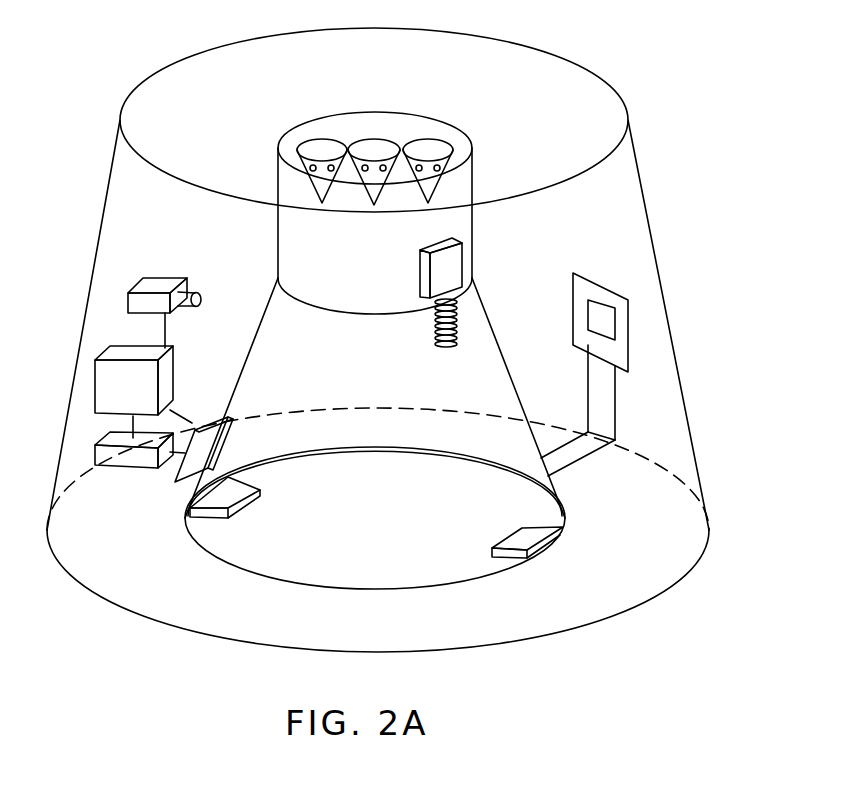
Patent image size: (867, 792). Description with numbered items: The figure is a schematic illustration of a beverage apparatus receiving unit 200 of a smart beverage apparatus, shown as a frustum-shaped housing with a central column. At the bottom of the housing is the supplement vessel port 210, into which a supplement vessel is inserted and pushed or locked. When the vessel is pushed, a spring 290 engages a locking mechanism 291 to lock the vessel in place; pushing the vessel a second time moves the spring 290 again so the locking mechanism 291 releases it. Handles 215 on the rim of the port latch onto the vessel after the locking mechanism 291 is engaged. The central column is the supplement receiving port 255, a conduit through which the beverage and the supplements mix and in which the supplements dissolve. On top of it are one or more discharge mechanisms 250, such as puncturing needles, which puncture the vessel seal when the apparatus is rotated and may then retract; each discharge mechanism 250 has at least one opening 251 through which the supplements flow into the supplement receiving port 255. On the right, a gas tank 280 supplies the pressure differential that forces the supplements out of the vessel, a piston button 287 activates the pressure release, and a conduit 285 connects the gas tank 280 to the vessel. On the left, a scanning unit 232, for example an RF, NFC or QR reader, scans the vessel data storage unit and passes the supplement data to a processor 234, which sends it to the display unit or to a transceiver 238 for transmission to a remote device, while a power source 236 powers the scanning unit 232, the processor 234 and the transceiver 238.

The beverage apparatus receiving unit 200 is at (630, 44).
The supplement vessel port 210 is at (408, 541).
The handles 215 is at (232, 496).
The scanning unit 232 is at (183, 491).
The processor 234 is at (100, 383).
The power source 236 is at (131, 297).
The transceiver 238 is at (97, 450).
The discharge mechanism 250 is at (377, 152).
The opening 251 is at (366, 177).
The supplement receiving port 255 is at (276, 183).
The gas tank 280 is at (629, 362).
The conduit 285 is at (617, 410).
The piston button 287 is at (617, 322).
The spring 290 is at (453, 322).
The locking mechanism 291 is at (460, 267).